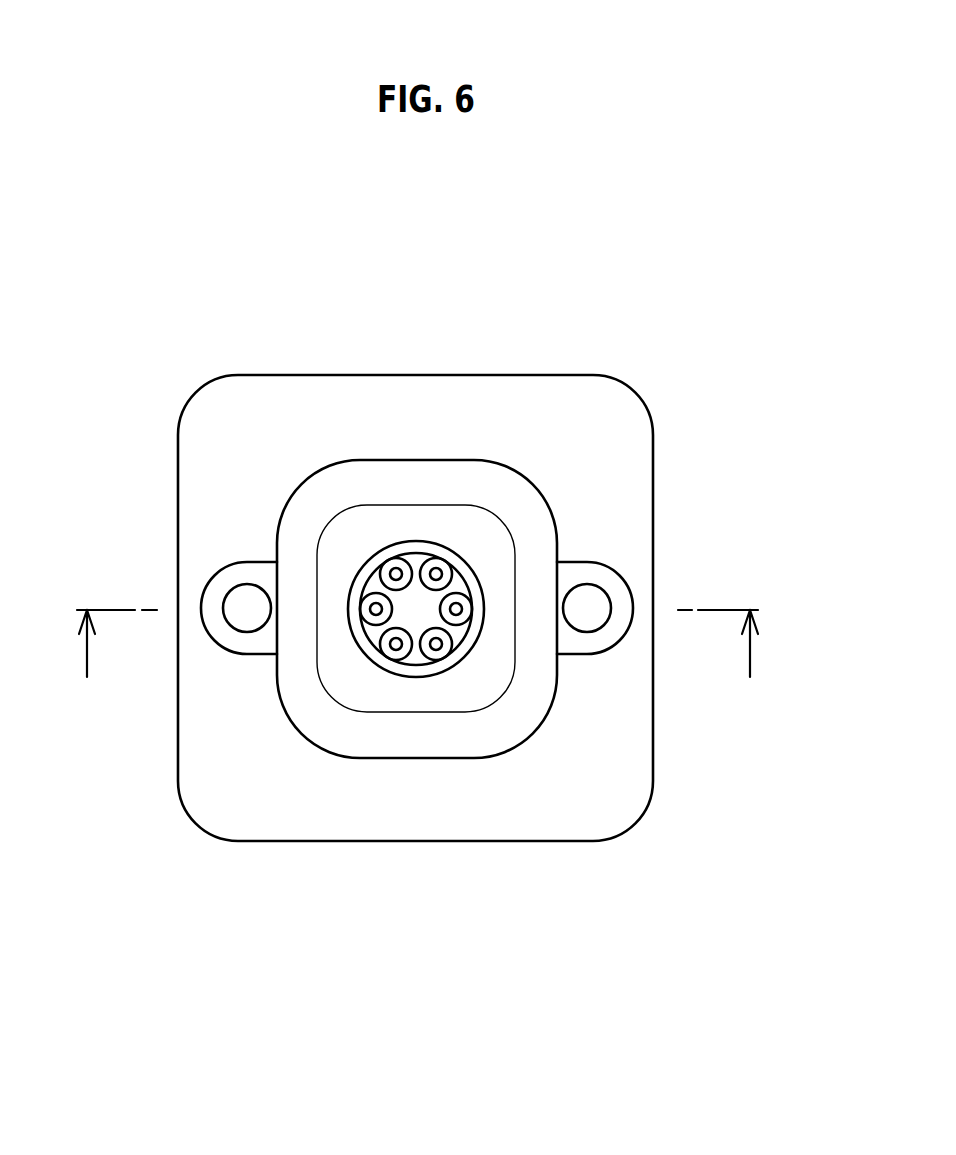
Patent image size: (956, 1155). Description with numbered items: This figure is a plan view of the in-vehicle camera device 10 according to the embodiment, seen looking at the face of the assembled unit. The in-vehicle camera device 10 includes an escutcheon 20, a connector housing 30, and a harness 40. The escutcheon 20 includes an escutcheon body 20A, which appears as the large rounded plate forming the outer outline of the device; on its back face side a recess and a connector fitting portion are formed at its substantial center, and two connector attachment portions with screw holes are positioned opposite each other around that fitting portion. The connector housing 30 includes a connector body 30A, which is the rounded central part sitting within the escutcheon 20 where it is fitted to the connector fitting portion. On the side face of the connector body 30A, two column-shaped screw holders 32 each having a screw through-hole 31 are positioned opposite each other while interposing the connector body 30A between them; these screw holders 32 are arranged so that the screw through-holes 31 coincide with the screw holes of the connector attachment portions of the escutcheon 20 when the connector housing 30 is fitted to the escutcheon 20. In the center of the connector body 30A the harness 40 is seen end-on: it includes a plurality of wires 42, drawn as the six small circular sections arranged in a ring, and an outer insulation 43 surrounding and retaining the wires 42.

The in-vehicle camera device 10 is at (678, 356).
The escutcheon 20 is at (598, 849).
The escutcheon body 20A is at (622, 772).
The connector housing 30 is at (408, 444).
The connector body 30A is at (497, 490).
The screw through-hole 31 is at (247, 600).
The screw holder 32 is at (203, 593).
The harness 40 is at (368, 673).
The wire 42 is at (394, 568).
The outer insulation 43 is at (462, 660).